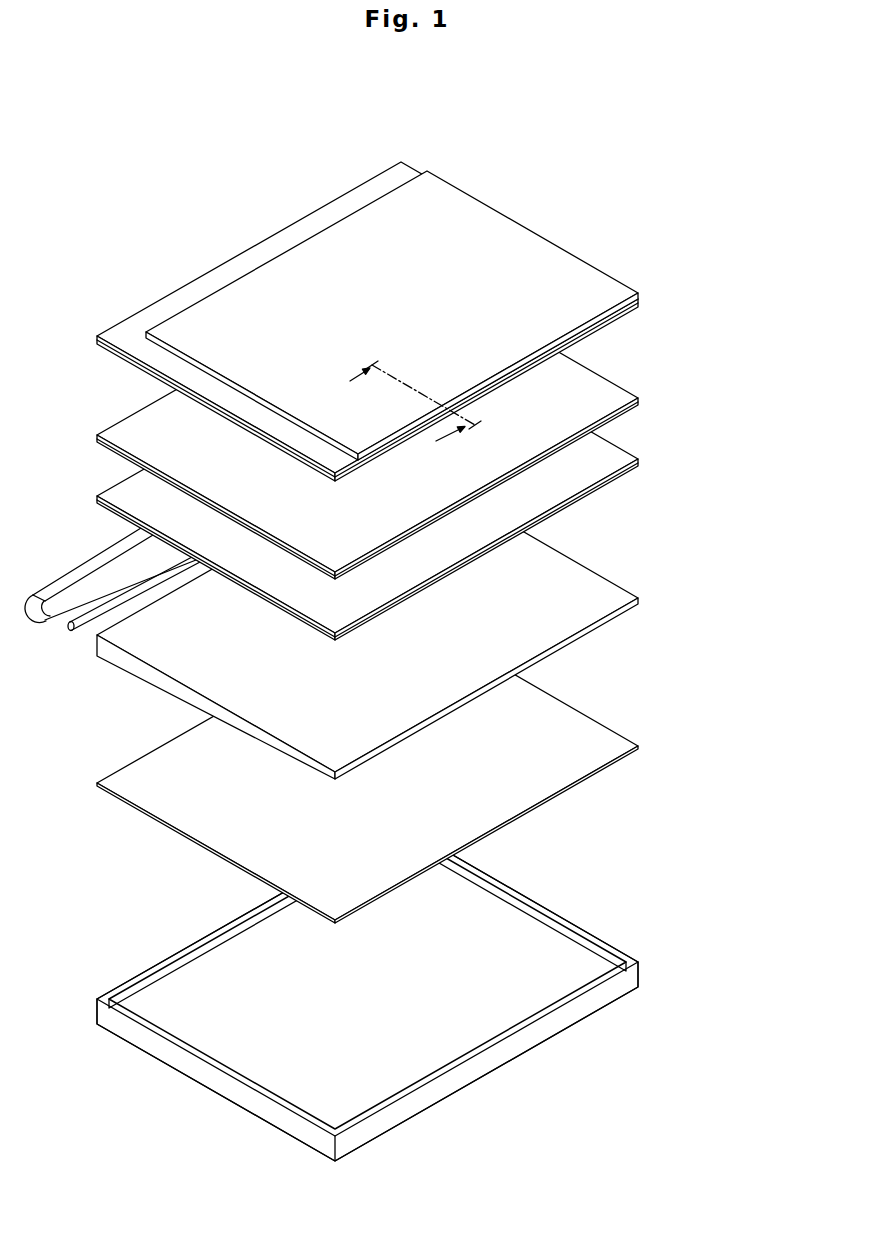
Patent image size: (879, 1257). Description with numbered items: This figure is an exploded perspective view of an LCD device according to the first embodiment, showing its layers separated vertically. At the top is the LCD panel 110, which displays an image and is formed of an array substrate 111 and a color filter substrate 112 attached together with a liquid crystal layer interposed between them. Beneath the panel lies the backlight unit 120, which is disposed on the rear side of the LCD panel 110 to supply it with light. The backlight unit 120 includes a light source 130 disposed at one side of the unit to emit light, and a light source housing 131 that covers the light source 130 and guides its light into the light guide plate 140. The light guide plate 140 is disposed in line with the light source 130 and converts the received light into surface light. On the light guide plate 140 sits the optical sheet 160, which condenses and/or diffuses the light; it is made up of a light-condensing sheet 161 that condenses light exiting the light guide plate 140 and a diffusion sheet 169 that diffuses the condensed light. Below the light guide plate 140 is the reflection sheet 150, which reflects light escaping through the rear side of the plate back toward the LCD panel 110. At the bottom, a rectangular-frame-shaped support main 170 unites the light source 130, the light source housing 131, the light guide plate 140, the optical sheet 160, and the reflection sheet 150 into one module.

The LCD panel 110 is at (367, 282).
The array substrate 111 is at (406, 164).
The color filter substrate 112 is at (392, 292).
The backlight unit 120 is at (405, 711).
The light source 130 is at (80, 628).
The light source housing 131 is at (63, 582).
The light guide plate 140 is at (618, 592).
The reflection sheet 150 is at (618, 740).
The optical sheet 160 is at (415, 450).
The light-condensing sheet 161 is at (645, 461).
The diffusion sheet 169 is at (697, 457).
The support main 170 is at (614, 956).